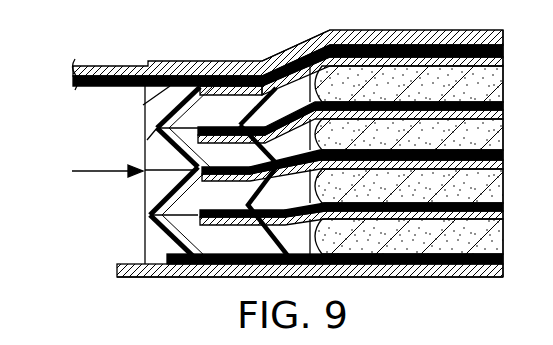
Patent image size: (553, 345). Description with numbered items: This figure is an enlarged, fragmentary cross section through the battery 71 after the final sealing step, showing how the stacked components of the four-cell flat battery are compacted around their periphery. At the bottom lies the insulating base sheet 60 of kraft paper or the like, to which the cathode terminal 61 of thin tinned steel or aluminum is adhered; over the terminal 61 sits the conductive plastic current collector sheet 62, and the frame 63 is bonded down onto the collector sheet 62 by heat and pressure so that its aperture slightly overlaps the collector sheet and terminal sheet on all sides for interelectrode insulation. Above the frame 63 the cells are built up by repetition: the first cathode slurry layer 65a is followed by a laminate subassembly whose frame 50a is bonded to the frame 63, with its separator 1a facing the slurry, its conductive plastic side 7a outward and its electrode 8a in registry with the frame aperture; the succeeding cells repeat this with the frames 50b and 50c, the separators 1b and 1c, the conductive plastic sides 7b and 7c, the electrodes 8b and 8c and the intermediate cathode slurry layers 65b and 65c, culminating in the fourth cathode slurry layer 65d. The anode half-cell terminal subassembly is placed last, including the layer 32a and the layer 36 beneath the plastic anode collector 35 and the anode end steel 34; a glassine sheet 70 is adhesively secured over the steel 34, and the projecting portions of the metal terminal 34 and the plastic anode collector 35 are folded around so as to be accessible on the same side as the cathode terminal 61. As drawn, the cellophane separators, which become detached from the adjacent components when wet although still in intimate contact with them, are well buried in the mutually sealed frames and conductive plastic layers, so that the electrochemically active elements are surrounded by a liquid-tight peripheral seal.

The anode end steel 34 is at (99, 72).
The plastic anode collector 35 is at (96, 86).
The inner insulating layer 36 is at (503, 60).
The glassine sheet 70 is at (365, 33).
The insulating layer of fold 32a is at (258, 93).
The fourth cathode slurry layer 65d is at (487, 90).
The spacer layer 65c is at (482, 135).
The spacer layer 65b is at (490, 185).
The cathode slurry layer 65a is at (490, 237).
The conductor layer 8c is at (497, 113).
The conductor layer 8b is at (487, 160).
The conductor layer 8a is at (495, 210).
The conductor strip 7c is at (204, 134).
The conductor strip 7b is at (240, 172).
The conductive plastic side 7a is at (219, 211).
The insulating strip 1c is at (197, 136).
The insulating strip 1b is at (203, 181).
The insulating strip 1a is at (222, 228).
The conductive plastic current collector sheet 62 is at (503, 258).
The cathode terminal 61 is at (503, 271).
The insulating base sheet 60 is at (478, 273).
The frame 50c is at (163, 116).
The frame 50b is at (165, 152).
The frame 50a is at (163, 193).
The frame 63 is at (158, 232).
The battery 71 is at (98, 171).